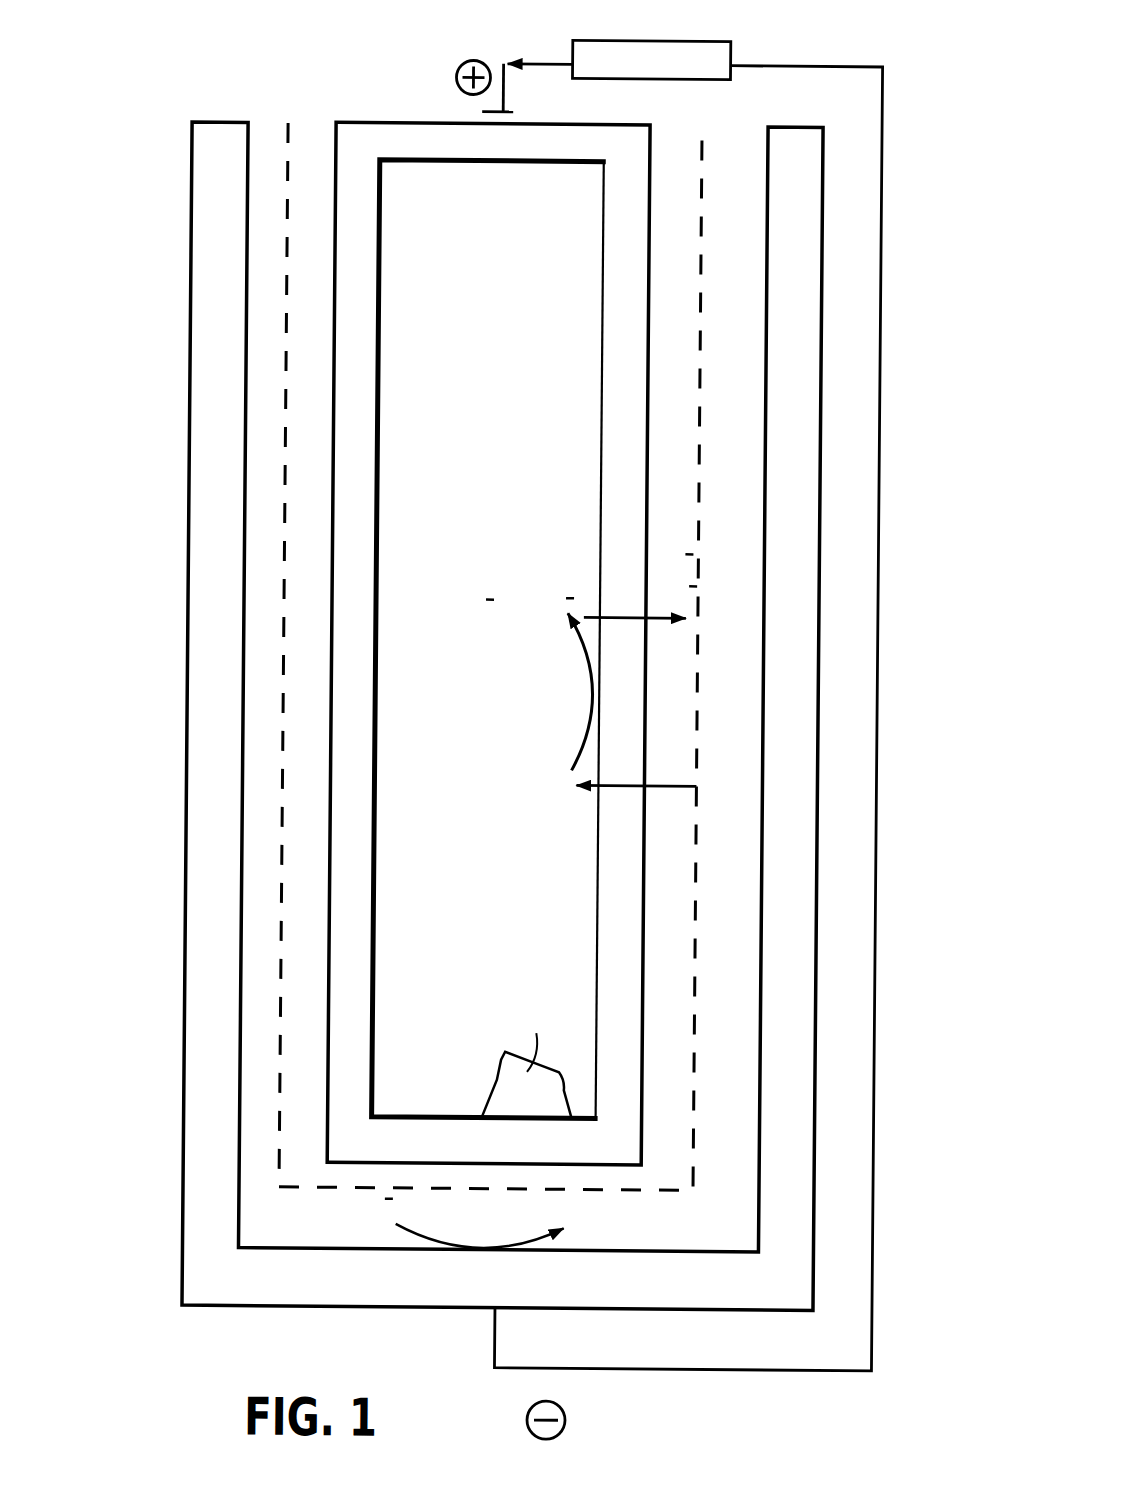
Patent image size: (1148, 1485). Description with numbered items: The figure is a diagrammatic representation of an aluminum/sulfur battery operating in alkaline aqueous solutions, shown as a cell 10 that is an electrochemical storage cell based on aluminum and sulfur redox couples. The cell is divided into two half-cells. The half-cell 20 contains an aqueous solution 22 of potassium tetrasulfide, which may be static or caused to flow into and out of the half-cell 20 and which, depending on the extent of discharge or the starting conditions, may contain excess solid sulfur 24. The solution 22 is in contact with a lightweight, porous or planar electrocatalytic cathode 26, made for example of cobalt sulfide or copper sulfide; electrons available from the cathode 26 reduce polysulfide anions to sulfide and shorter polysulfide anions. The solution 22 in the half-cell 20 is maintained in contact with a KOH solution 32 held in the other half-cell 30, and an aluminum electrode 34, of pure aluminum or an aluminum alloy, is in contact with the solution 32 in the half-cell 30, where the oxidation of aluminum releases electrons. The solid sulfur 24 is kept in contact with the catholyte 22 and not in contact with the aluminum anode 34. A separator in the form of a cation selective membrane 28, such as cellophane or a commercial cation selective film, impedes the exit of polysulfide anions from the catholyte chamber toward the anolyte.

The cell 10 is at (186, 499).
The half-cell 20 is at (436, 1116).
The aqueous solution 22 is at (498, 208).
The excess solid sulfur 24 is at (499, 1079).
The electrocatalytic cathode 26 is at (598, 217).
The cation selective membrane 28 is at (698, 913).
The half-cell 30 is at (247, 1233).
The KOH solution 32 is at (282, 185).
The aluminum electrode 34 is at (761, 247).